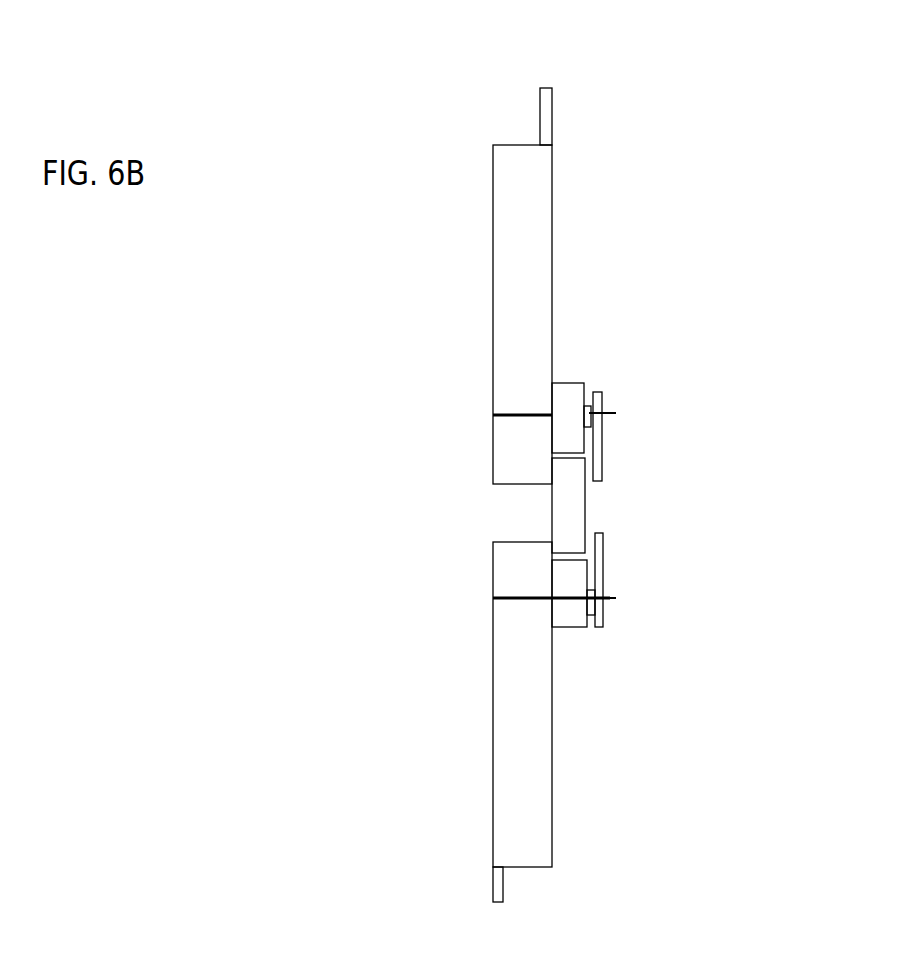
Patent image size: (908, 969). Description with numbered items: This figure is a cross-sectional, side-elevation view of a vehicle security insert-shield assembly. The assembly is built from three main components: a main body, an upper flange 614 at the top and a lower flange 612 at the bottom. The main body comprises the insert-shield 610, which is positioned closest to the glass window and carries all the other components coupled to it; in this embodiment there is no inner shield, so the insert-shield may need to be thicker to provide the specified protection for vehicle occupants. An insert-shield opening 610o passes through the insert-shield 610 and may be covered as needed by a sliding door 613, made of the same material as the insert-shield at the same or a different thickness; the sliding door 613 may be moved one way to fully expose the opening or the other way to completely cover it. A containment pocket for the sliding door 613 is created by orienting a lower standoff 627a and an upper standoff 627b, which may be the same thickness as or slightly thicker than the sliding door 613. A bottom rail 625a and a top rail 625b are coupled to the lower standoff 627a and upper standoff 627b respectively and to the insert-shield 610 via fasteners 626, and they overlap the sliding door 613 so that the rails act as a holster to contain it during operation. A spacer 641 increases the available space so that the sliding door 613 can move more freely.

The insert-shield 610 is at (517, 190).
The insert-shield opening 610o is at (503, 513).
The lower flange 612 is at (497, 880).
The sliding door 613 is at (570, 508).
The upper flange 614 is at (553, 89).
The bottom rail 625a is at (607, 567).
The top rail 625b is at (605, 463).
The fasteners 626 is at (617, 417).
The lower standoff 627a is at (568, 622).
The upper standoff 627b is at (570, 397).
The spacer 641 is at (588, 415).